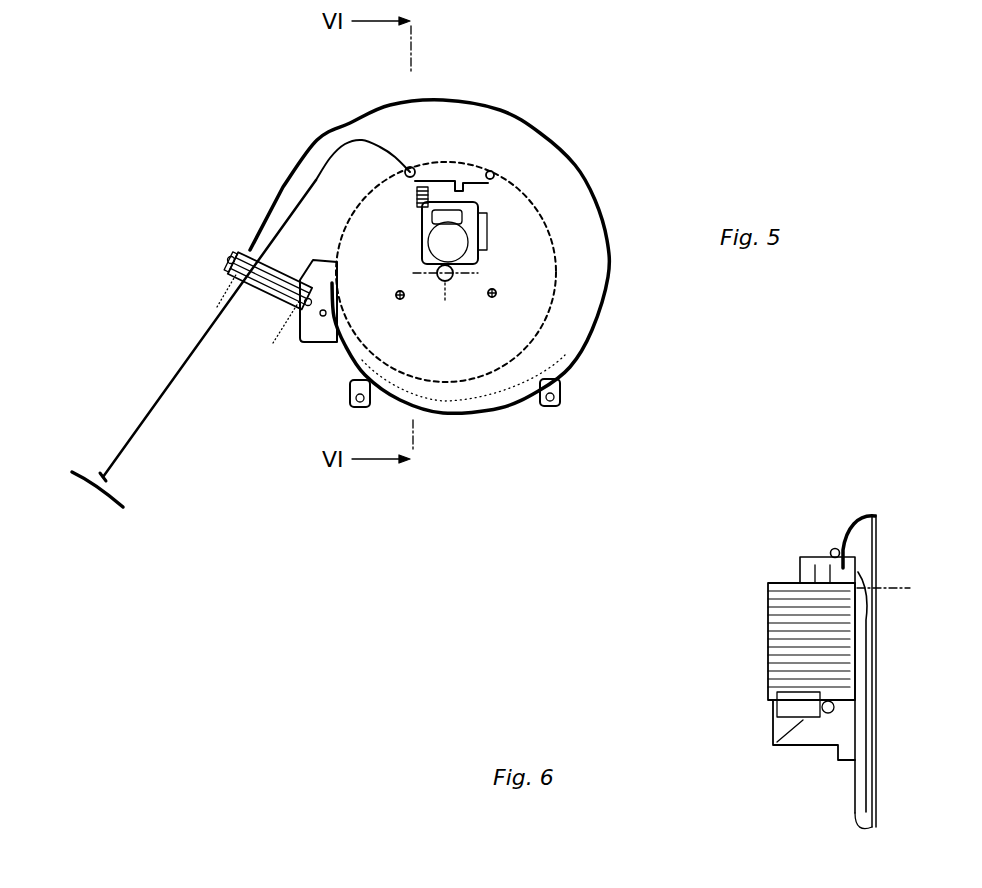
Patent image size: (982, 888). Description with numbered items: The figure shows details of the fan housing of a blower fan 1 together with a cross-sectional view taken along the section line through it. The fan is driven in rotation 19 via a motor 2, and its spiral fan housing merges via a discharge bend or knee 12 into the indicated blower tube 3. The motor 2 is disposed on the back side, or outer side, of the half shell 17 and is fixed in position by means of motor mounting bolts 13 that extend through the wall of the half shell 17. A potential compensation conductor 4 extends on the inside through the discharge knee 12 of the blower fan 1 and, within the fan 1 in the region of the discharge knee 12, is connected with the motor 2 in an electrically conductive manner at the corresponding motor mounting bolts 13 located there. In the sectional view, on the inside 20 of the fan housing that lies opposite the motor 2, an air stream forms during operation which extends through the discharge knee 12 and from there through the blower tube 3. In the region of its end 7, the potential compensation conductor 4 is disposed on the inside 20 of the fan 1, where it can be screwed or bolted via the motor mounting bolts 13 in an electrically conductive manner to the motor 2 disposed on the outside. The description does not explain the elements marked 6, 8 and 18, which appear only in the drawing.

In FIG. 5, the blower fan 1 is at (244, 153).
In FIG. 6, the blower fan 1 is at (803, 788).
In FIG. 5, the motor 2 is at (427, 242).
In FIG. 6, the motor 2 is at (778, 597).
In FIG. 5, the blower tube 3 is at (222, 300).
In FIG. 5, the potential compensation conductor 4 is at (165, 387).
In FIG. 6, the potential compensation conductor 4 is at (866, 714).
In FIG. 5, the hose end / nozzle 6 is at (108, 480).
In FIG. 5, the end of the potential compensation conductor 7 is at (393, 138).
In FIG. 6, the end of the potential compensation conductor 7 is at (875, 613).
In FIG. 5, the foot / support 8 is at (83, 477).
In FIG. 5, the discharge knee 12 is at (372, 173).
In FIG. 6, the discharge knee 12 is at (865, 540).
In FIG. 5, the motor mounting bolts 13 is at (413, 168).
In FIG. 6, the motor mounting bolts 13 is at (888, 582).
In FIG. 5, the half shell 17 is at (520, 110).
In FIG. 6, the half shell 17 is at (858, 522).
In FIG. 5, the fan wheel (dashed outline) 18 is at (548, 222).
In FIG. 5, the rotation 19 is at (448, 285).
In FIG. 6, the inside of the fan housing 20 is at (908, 782).